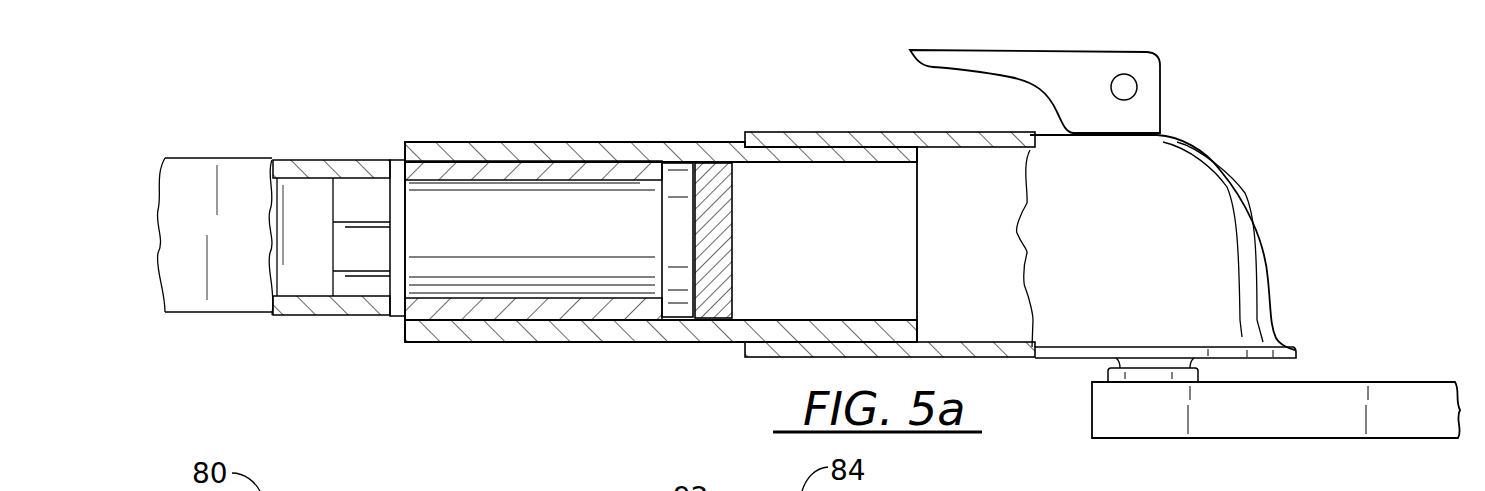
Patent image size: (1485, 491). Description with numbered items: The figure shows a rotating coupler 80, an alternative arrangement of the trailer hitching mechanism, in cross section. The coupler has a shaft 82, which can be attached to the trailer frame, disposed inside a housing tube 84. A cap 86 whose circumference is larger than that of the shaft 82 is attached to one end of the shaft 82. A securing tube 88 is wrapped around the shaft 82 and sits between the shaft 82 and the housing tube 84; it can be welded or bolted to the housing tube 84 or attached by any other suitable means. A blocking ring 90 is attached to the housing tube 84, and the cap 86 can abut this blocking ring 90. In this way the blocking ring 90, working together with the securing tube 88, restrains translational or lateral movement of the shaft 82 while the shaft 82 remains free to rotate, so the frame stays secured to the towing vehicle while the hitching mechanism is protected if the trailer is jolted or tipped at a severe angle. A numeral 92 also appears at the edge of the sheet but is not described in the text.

The rotating coupler 80 is at (538, 132).
The shaft 82 is at (460, 272).
The housing tube 84 is at (741, 172).
The cap 86 is at (683, 307).
The securing tube 88 is at (503, 307).
The blocking ring 90 is at (707, 263).
The spring 92 is at (417, 490).